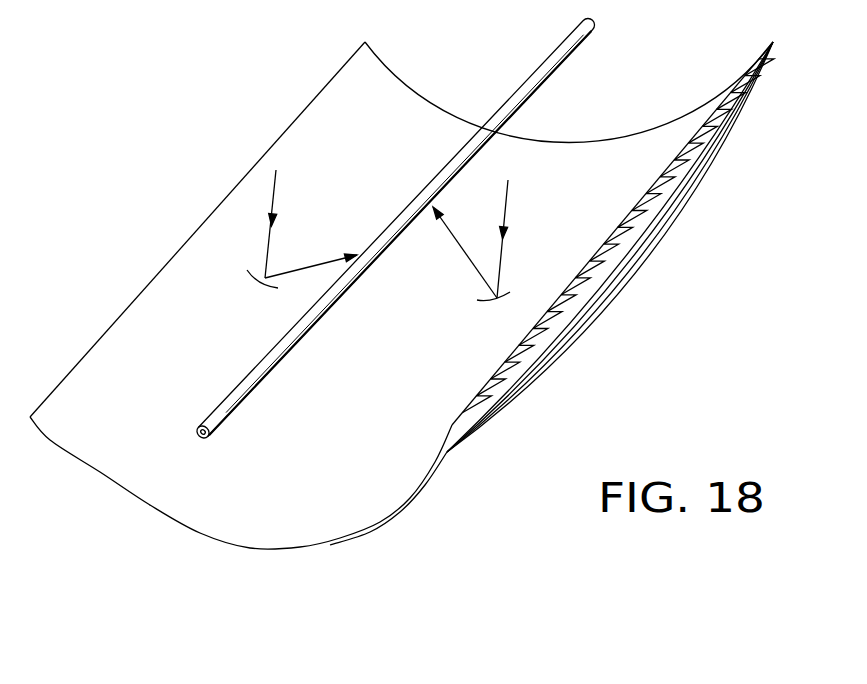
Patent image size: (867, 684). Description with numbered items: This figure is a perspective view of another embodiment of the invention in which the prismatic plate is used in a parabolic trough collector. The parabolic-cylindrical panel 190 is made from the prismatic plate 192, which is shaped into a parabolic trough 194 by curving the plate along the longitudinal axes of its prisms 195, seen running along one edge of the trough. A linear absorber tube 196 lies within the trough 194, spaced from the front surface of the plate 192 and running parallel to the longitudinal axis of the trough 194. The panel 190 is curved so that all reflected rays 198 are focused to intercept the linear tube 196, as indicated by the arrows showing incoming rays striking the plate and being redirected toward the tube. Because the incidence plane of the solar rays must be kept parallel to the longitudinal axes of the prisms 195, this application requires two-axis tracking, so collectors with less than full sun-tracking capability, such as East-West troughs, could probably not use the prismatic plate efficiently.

The parabolic-cylindrical panel 190 is at (613, 307).
The prismatic plate 192 is at (537, 137).
The parabolic trough 194 is at (285, 458).
The prisms 195 is at (703, 179).
The linear absorber tube 196 is at (513, 93).
The reflected rays 198 is at (302, 267).